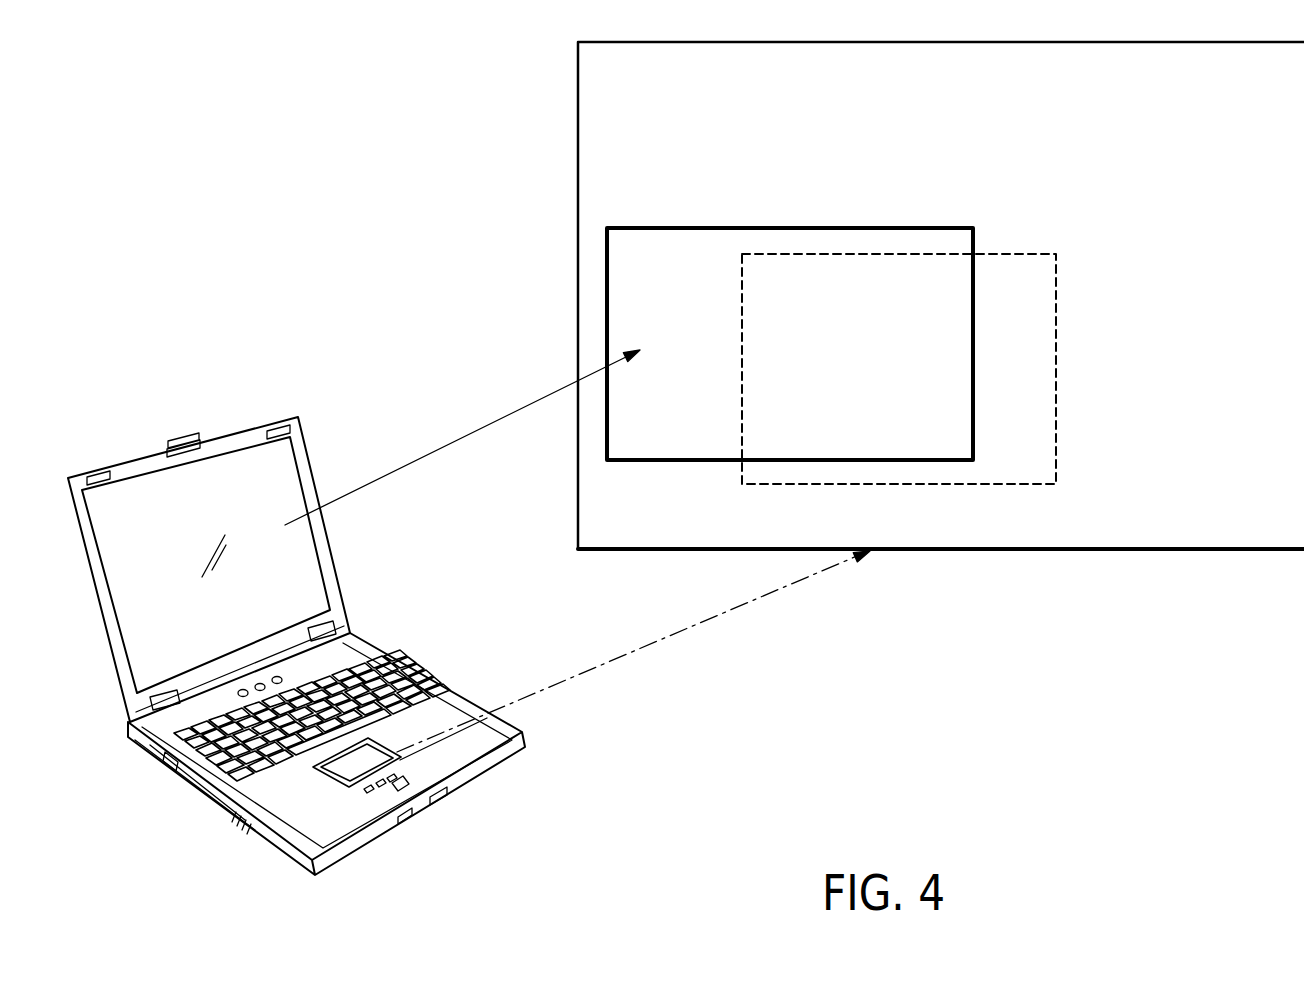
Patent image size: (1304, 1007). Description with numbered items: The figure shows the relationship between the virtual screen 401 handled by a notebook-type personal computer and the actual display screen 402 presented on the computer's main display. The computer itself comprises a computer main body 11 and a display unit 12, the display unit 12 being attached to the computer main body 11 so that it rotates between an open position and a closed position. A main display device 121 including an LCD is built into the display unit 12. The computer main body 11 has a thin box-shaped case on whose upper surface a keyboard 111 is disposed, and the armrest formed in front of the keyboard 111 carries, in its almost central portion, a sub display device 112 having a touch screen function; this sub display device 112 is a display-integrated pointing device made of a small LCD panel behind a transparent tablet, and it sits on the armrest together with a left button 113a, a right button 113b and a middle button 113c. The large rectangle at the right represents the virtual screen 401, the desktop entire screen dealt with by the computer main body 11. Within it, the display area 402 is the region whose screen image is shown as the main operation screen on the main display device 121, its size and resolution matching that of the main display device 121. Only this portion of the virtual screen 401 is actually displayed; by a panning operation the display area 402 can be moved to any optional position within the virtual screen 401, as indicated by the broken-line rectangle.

The computer main body 11 is at (253, 830).
The display unit 12 is at (330, 535).
The main display device 121 is at (285, 460).
The keyboard 111 is at (410, 667).
The sub display device (touch pad device) 112 is at (330, 778).
The left button 113a is at (367, 794).
The right button 113b is at (407, 797).
The middle button 113c is at (398, 791).
The virtual screen 401 is at (908, 553).
The display area (actual display screen) 402 is at (688, 462).